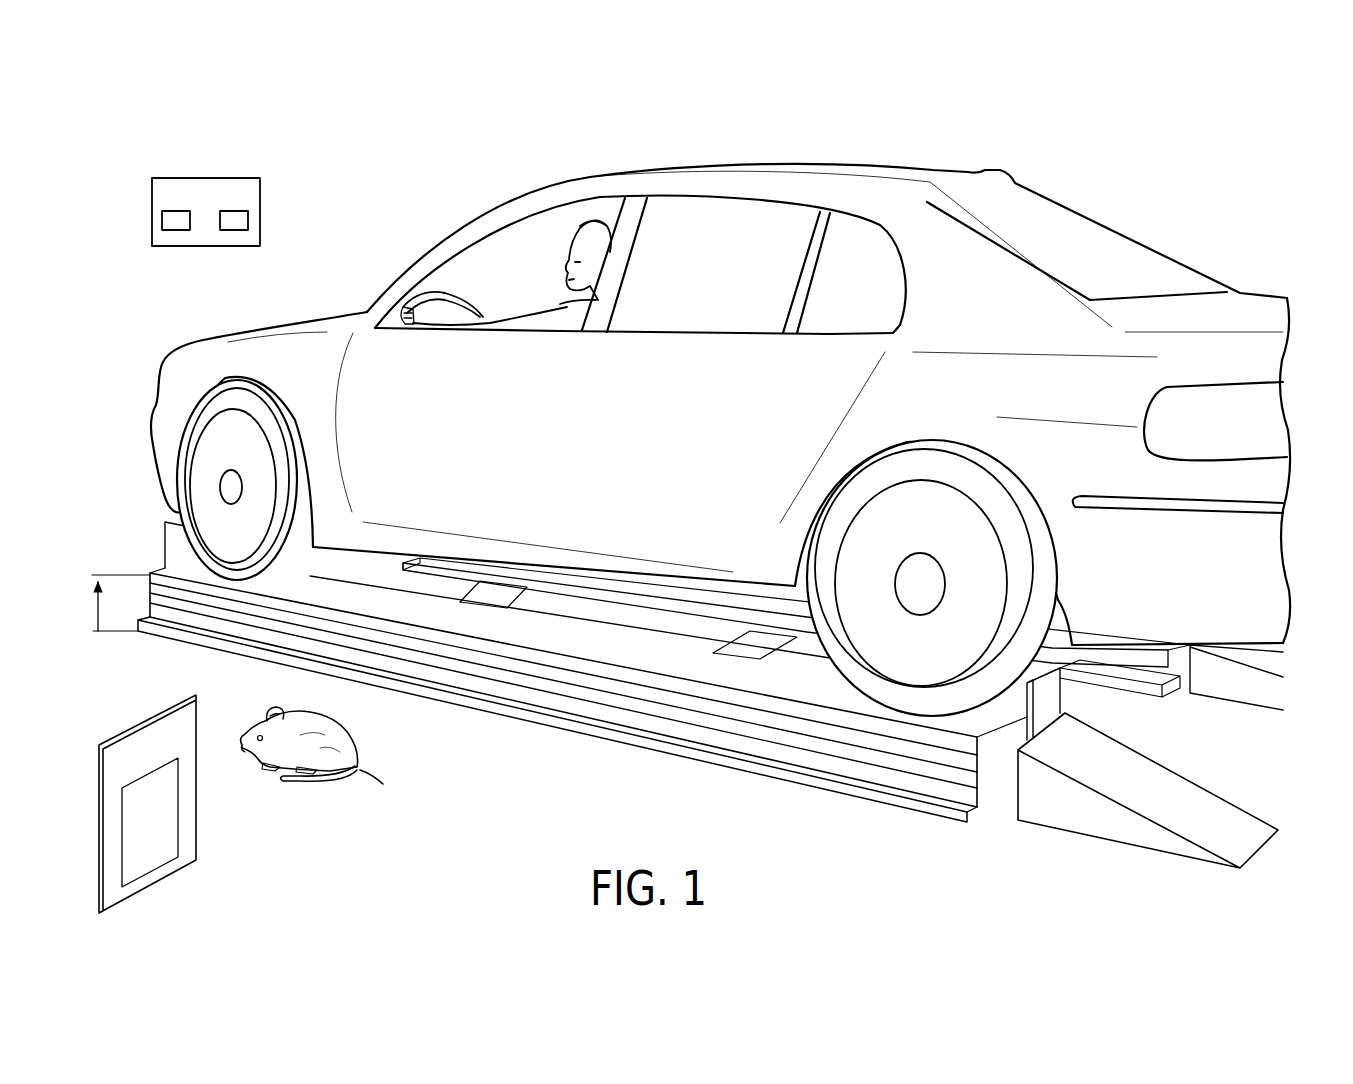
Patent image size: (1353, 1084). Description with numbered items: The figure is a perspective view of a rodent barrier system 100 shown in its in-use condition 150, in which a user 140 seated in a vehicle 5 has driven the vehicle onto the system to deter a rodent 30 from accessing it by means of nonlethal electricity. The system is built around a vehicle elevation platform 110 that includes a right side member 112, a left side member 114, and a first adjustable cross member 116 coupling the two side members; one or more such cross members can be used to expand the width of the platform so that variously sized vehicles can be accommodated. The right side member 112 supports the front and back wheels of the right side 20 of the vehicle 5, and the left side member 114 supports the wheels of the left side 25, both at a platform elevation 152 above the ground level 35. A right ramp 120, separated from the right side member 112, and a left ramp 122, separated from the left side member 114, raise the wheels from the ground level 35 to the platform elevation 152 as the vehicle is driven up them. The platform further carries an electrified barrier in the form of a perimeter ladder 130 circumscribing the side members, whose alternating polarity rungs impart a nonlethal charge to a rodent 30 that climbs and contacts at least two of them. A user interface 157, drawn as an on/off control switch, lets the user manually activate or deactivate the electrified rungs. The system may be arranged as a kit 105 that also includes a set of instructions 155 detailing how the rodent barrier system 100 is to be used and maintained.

The rodent barrier system 100 is at (1040, 150).
The vehicle 5 is at (886, 175).
The user 140 is at (604, 221).
The in-use condition 150 is at (1212, 204).
The right side of the vehicle 20 is at (1270, 288).
The left side of the vehicle 25 is at (1202, 341).
The user interface 157 is at (260, 217).
The platform elevation 152 is at (122, 575).
The ground level 35 is at (108, 633).
The rodent 30 is at (364, 777).
The kit 105 is at (489, 752).
The vehicle elevation platform 110 is at (551, 769).
The left side member 114 is at (613, 765).
The first adjustable cross member 116 is at (735, 645).
The perimeter ladder 130 is at (831, 789).
The right ramp 120 is at (1235, 683).
The right side member 112 is at (1175, 714).
The left ramp 122 is at (1240, 822).
The set of instructions 155 is at (196, 857).